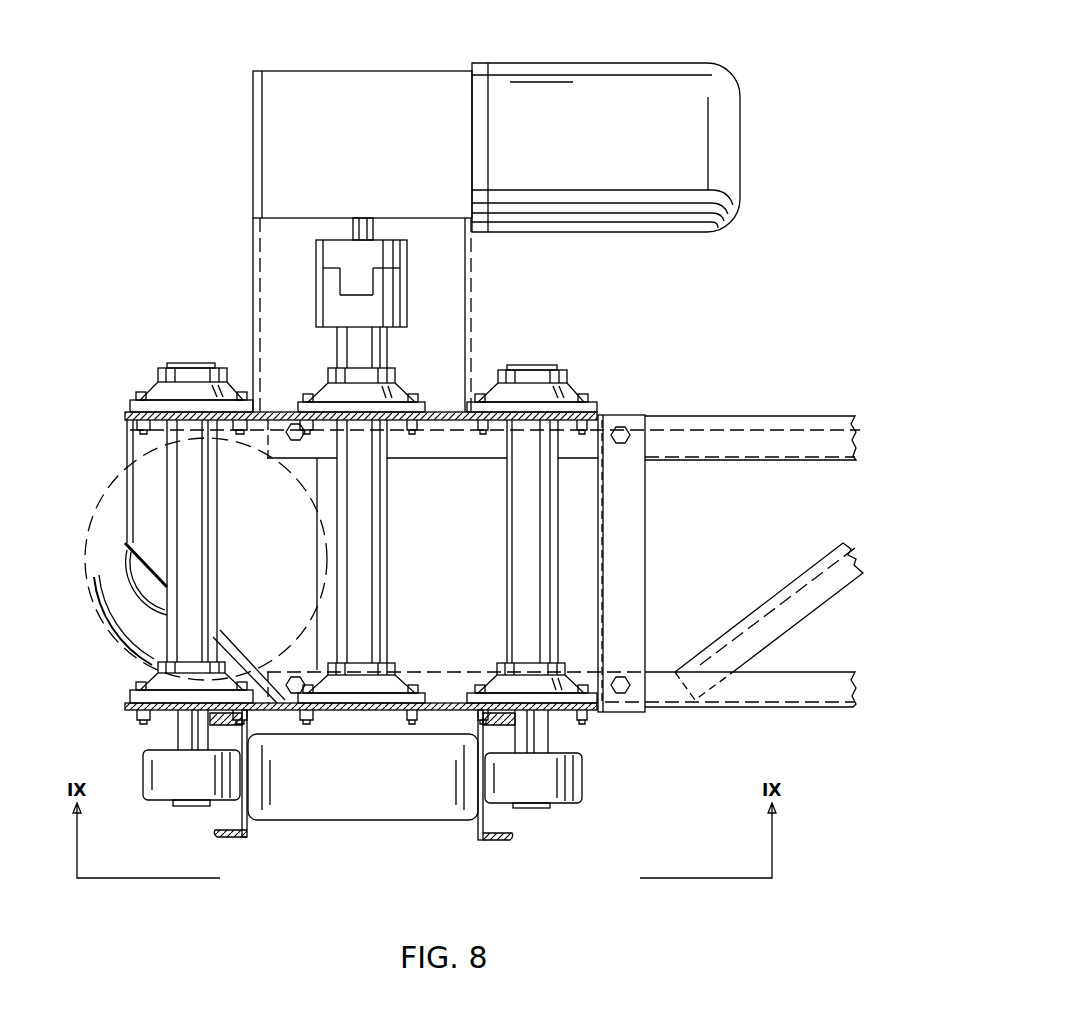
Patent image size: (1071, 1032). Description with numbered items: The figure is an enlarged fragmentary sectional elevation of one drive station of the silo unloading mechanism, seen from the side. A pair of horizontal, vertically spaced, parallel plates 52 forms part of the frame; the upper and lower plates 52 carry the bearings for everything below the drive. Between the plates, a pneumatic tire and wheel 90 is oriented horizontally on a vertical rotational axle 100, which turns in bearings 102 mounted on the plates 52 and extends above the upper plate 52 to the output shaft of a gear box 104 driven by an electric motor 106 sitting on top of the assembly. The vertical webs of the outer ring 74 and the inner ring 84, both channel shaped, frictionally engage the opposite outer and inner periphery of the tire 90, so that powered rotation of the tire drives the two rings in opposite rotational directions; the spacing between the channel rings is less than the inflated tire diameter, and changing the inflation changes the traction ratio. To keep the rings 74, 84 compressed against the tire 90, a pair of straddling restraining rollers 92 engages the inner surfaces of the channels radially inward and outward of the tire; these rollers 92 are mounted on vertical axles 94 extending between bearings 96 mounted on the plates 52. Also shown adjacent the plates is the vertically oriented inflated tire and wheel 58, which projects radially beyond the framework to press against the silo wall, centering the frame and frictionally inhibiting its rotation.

The horizontal plates 52 is at (548, 408).
The inflated tire and wheel 58 is at (115, 498).
The outer ring 74 is at (232, 840).
The inner ring 84 is at (497, 840).
The pneumatic tire and wheel 90 is at (388, 800).
The restraining rollers 92 is at (167, 785).
The vertical axles 94 is at (185, 729).
The bearings 96 is at (165, 683).
The rotational axle 100 is at (378, 507).
The bearings 102 is at (408, 690).
The gear box 104 is at (381, 124).
The electric motor 106 is at (622, 140).